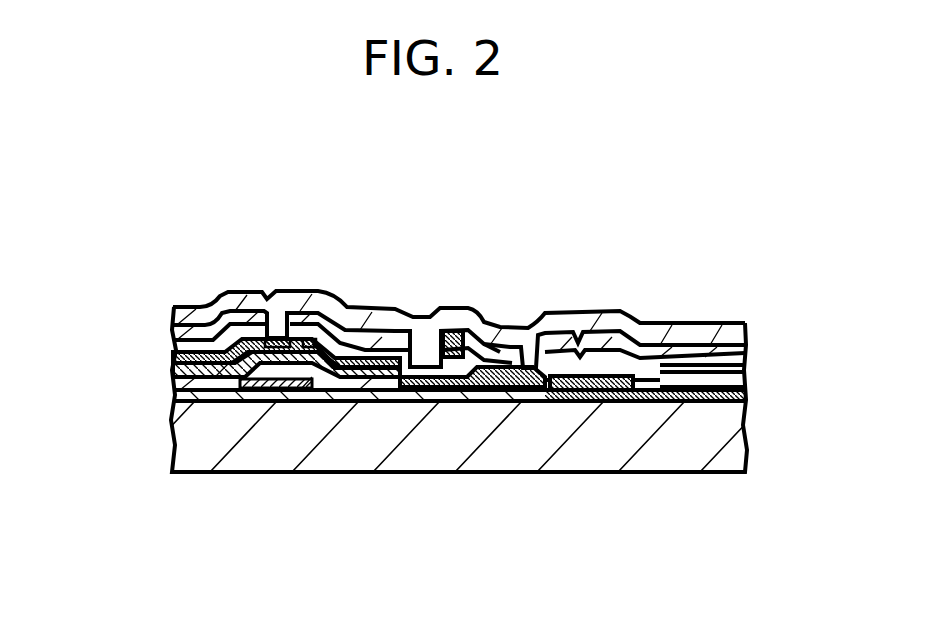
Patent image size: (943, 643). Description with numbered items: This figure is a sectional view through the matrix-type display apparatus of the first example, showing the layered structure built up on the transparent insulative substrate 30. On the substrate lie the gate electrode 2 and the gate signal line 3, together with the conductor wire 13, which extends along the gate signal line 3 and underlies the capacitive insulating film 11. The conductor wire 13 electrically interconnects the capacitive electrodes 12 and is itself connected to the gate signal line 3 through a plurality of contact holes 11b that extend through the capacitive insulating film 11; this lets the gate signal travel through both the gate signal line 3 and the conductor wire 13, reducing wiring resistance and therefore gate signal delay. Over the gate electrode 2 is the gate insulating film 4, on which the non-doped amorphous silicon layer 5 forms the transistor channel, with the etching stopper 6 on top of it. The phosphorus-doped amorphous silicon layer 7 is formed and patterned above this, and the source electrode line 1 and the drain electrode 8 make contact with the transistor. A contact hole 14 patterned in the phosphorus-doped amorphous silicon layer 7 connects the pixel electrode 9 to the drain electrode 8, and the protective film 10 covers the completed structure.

The source electrode line 1 is at (172, 318).
The gate electrode 2 is at (243, 378).
The gate signal line 3 is at (747, 368).
The gate insulating film 4 is at (172, 393).
The non-doped amorphous silicon layer 5 is at (172, 372).
The etching stopper 6 is at (288, 330).
The phosphorus-doped amorphous silicon layer 7 is at (172, 341).
The drain electrode 8 is at (379, 312).
The pixel electrode 9 is at (492, 347).
The protective film 10 is at (427, 330).
The capacitive insulating film 11 is at (327, 395).
The contact holes 11b is at (687, 372).
The capacitive electrode 12 is at (578, 397).
The conductor wire 13 is at (747, 400).
The contact hole 14 is at (410, 345).
The transparent insulative substrate 30 is at (432, 455).